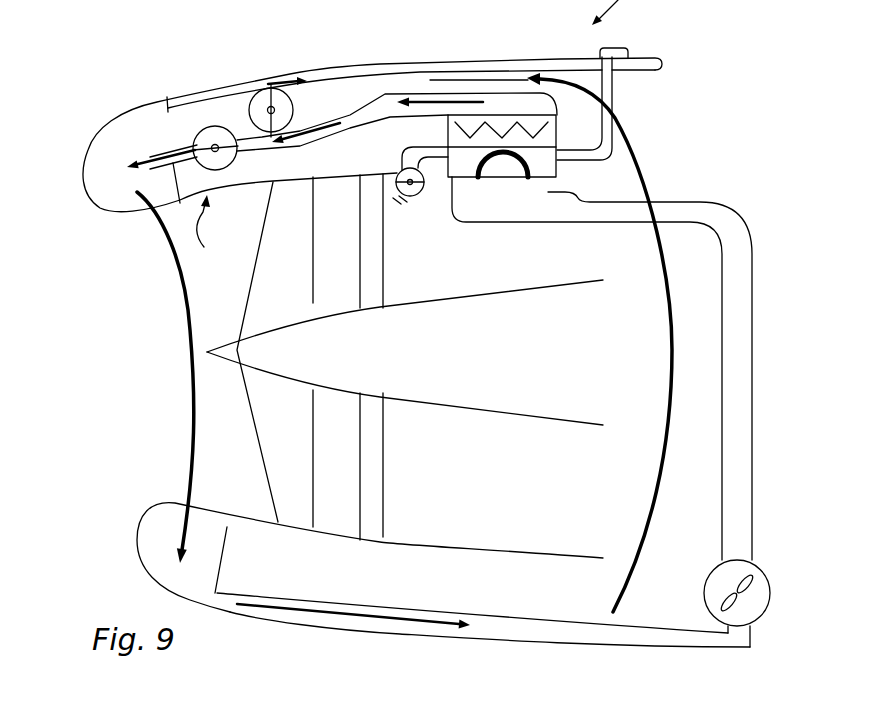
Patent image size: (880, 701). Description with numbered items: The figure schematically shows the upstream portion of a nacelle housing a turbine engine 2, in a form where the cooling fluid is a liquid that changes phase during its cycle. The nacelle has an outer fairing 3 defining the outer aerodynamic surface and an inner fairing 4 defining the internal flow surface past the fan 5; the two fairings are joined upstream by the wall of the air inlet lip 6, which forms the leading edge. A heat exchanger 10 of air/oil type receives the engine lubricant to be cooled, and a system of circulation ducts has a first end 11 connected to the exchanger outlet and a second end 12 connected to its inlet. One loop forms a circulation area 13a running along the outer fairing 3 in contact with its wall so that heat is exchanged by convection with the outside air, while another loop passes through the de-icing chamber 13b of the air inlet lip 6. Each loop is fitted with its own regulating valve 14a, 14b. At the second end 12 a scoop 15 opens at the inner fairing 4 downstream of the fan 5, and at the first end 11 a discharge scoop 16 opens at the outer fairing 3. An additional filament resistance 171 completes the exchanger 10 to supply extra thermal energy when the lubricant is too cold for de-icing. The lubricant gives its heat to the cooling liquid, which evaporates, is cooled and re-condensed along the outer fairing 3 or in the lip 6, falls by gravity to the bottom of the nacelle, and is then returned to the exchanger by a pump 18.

The turbine engine 2 is at (568, 307).
The outer fairing 3 is at (327, 73).
The inner fairing 4 is at (209, 230).
The fan 5 is at (253, 313).
The air inlet lip 6 is at (98, 145).
The heat exchanger 10 is at (500, 120).
The first end 11 is at (517, 103).
The second end 12 is at (567, 193).
The circulation area 13a is at (407, 67).
The de-icing chamber 13b is at (133, 122).
The regulating valve 14a is at (253, 100).
The regulating valve 14b is at (208, 130).
The scoop 15 is at (400, 198).
The discharge scoop 16 is at (627, 52).
The additional filament resistance 171 is at (573, 133).
The pump 18 is at (755, 595).